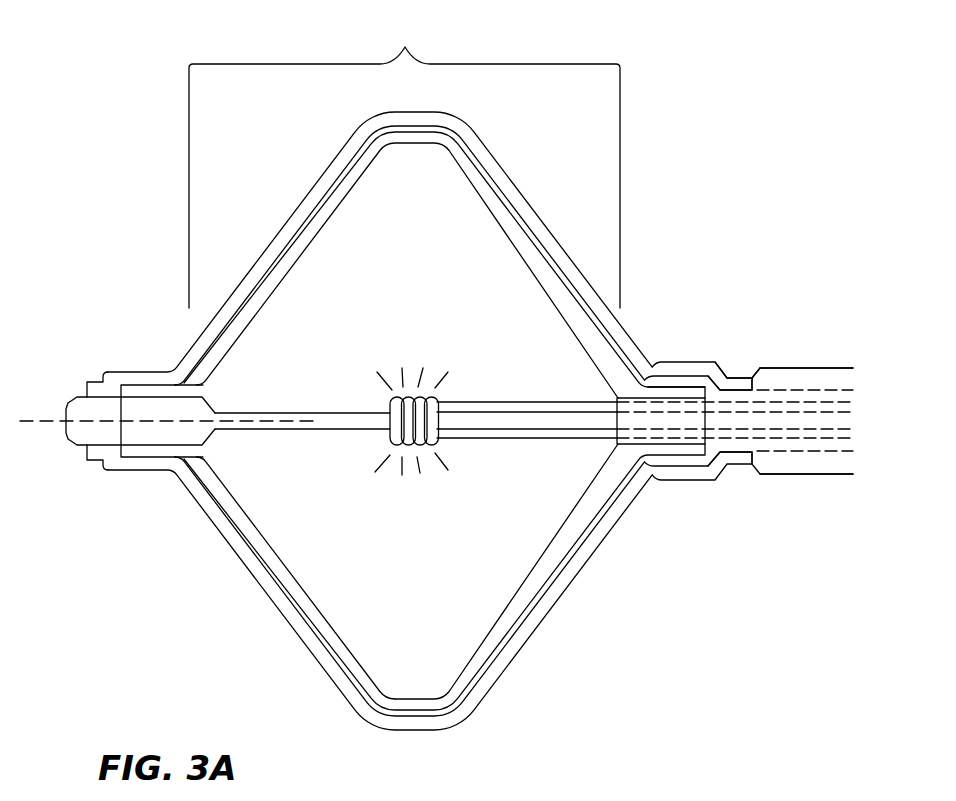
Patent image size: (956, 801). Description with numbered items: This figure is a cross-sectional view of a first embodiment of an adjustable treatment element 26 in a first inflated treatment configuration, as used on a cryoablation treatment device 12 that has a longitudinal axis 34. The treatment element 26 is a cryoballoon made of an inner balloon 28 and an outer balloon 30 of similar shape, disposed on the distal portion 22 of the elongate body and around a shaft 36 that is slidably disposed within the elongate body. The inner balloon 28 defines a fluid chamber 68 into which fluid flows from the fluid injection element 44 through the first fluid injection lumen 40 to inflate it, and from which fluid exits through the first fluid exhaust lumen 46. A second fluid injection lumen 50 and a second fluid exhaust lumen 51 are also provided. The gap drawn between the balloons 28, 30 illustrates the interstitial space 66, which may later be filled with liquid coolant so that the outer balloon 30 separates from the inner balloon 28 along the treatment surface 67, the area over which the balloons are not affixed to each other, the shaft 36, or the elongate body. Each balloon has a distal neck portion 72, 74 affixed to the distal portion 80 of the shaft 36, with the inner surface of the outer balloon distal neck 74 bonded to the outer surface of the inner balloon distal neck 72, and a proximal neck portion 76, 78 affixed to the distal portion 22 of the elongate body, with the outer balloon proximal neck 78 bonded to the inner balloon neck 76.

The treatment device 12 is at (116, 174).
The distal portion of the elongate body 22 is at (803, 366).
The treatment element 26 is at (298, 188).
The inner balloon 28 is at (600, 496).
The outer balloon 30 is at (578, 568).
The longitudinal axis 34 is at (32, 416).
The shaft 36 is at (298, 412).
The first fluid injection lumen 40 is at (746, 374).
The fluid injection element 44 is at (408, 400).
The first fluid exhaust lumen 46 is at (817, 437).
The second fluid injection lumen 50 is at (710, 378).
The second fluid exhaust lumen 51 is at (710, 452).
The interstitial space 66 is at (522, 622).
The treatment surface 67 is at (404, 164).
The fluid chamber 68 is at (330, 547).
The inner balloon distal neck portion 72 is at (157, 447).
The outer balloon distal neck portion 74 is at (142, 380).
The inner balloon proximal neck portion 76 is at (638, 390).
The outer balloon proximal neck portion 78 is at (738, 402).
The distal portion of the shaft 80 is at (80, 410).